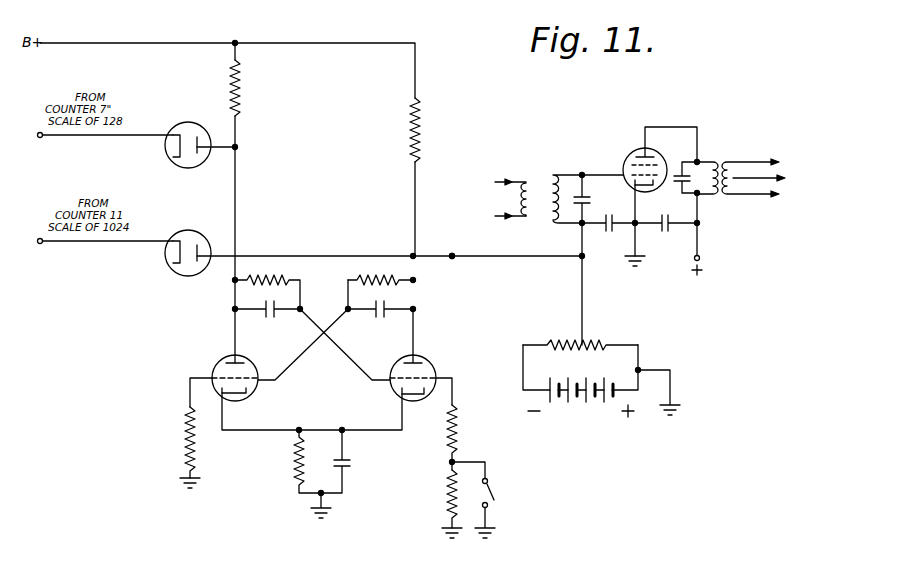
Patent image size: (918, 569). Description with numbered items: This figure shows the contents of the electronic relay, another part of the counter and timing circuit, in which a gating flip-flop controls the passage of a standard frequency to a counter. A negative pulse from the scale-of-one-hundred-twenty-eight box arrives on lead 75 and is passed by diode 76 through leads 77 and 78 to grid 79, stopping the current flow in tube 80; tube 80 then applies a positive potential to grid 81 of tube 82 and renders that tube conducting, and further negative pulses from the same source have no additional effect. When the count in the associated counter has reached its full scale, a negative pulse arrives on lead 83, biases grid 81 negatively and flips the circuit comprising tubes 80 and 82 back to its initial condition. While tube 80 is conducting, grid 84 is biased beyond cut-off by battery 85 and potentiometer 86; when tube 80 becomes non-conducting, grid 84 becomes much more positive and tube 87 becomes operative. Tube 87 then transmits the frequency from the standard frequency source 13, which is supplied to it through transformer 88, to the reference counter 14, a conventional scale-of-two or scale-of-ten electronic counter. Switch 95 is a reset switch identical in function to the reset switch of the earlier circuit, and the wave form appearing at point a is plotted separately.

The lead 75 is at (105, 136).
The diode 76 is at (186, 122).
The lead 77 is at (237, 170).
The lead 78 is at (381, 376).
The grid 79 is at (436, 374).
The tube 80 is at (418, 357).
The grid 81 is at (218, 360).
The tube 82 is at (248, 356).
The lead 83 is at (103, 243).
The grid 84 is at (632, 150).
The battery 85 is at (602, 407).
The potentiometer 86 is at (610, 345).
The tube 87 is at (674, 160).
The transformer 88 is at (538, 184).
The reset switch 95 is at (492, 490).
The point a is at (449, 268).
The standard frequency source 13 is at (487, 197).
The reference counter 14 is at (775, 184).